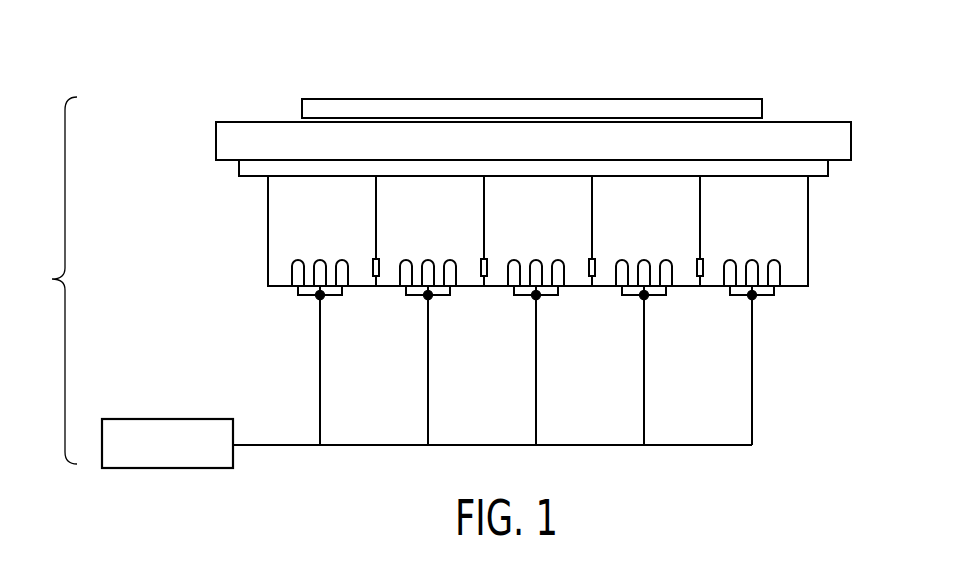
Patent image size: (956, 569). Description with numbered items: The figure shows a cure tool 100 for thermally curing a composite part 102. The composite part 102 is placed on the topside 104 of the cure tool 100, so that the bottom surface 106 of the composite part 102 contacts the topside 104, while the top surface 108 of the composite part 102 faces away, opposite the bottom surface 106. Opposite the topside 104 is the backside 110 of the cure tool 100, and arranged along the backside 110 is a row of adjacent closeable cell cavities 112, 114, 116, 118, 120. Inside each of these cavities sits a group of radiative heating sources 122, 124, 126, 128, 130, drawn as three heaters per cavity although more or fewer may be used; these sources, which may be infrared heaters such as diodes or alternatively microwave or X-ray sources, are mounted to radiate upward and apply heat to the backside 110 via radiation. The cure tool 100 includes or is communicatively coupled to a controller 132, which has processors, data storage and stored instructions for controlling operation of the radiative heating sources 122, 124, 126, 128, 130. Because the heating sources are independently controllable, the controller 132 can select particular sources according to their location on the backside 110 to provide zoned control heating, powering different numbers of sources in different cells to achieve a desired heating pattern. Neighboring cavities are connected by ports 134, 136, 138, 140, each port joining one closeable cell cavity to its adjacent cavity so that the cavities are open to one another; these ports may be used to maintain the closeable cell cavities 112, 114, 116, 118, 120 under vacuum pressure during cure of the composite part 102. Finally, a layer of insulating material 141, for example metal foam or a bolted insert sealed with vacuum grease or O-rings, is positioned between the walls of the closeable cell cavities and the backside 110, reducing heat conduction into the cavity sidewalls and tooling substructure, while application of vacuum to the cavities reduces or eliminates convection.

The cure tool 100 is at (47, 280).
The composite part 102 is at (331, 99).
The topside 104 is at (233, 122).
The bottom surface 106 is at (750, 111).
The top surface 108 is at (712, 97).
The backside 110 is at (236, 160).
The closeable cell cavity 112 is at (305, 210).
The closeable cell cavity 114 is at (413, 210).
The closeable cell cavity 116 is at (521, 210).
The closeable cell cavity 118 is at (629, 210).
The closeable cell cavity 120 is at (737, 210).
The radiative heating source 122 is at (320, 258).
The radiative heating source 124 is at (428, 258).
The radiative heating source 126 is at (536, 258).
The radiative heating source 128 is at (644, 258).
The radiative heating source 130 is at (752, 258).
The controller 132 is at (170, 419).
The port 134 is at (375, 278).
The port 136 is at (483, 278).
The port 138 is at (591, 278).
The port 140 is at (699, 278).
The insulating material 141 is at (261, 184).